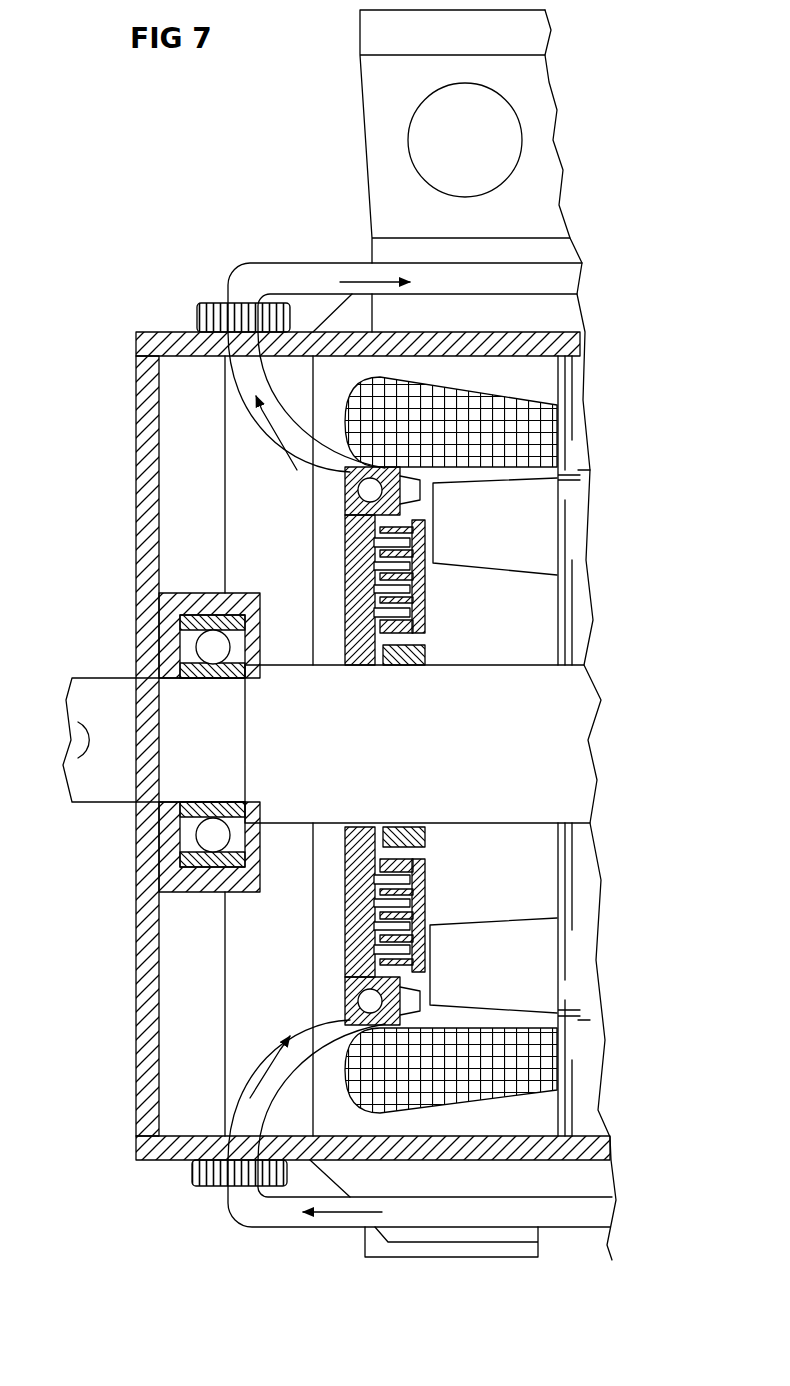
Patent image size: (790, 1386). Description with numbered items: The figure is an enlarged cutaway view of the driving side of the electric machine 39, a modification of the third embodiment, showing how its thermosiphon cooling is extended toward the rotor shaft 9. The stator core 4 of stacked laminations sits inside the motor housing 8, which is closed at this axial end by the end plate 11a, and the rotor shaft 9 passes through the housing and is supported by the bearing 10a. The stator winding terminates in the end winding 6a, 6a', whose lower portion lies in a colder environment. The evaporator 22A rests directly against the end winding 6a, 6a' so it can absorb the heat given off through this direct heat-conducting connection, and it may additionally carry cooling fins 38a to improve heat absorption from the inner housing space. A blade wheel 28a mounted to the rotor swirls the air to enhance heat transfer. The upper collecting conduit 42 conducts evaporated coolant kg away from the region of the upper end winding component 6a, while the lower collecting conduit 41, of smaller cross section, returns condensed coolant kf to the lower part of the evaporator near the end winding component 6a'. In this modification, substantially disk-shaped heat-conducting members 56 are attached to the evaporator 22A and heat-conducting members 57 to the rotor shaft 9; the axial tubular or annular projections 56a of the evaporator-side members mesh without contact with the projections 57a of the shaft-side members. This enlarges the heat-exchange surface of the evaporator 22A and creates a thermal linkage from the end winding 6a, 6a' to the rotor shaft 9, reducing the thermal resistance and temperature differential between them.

The electric machine 39 is at (615, 196).
The upper collecting conduit 42 is at (292, 272).
The evaporated coolant kg is at (357, 280).
The motor housing 8 is at (572, 348).
The end winding 6a is at (491, 422).
The end plate 11a is at (150, 470).
The evaporator 22A is at (358, 492).
The cooling fins 38a is at (422, 490).
The heat-conducting members 56 is at (345, 570).
The stator core 4 is at (578, 612).
The axial tubular or annular projections 56a is at (366, 640).
The bearing 10a is at (213, 665).
The rotor shaft 9 is at (584, 760).
The axial tubular or annular projections 57a is at (376, 840).
The heat-conducting members 57 is at (500, 897).
The blade wheel 28a is at (545, 960).
The end winding 6a' is at (509, 1070).
The lower collecting conduit 41 is at (605, 1232).
The condensed coolant kf is at (352, 1222).